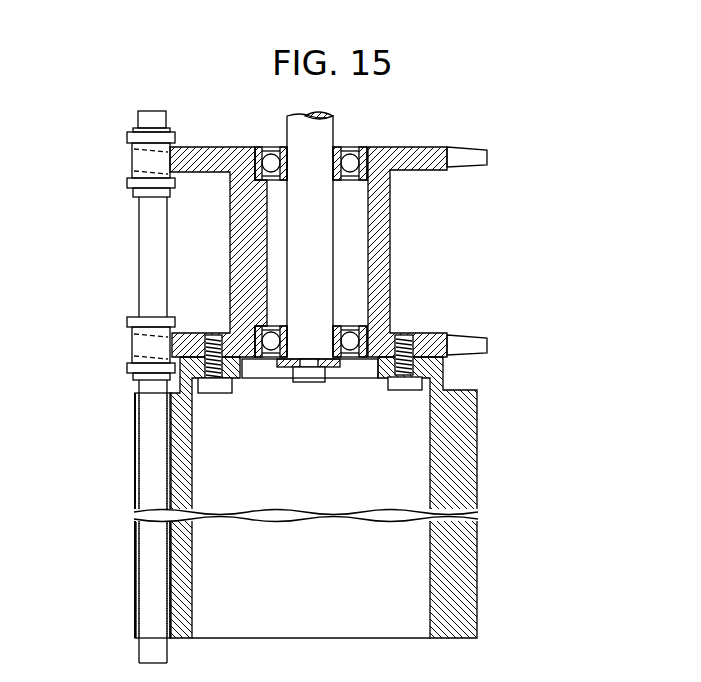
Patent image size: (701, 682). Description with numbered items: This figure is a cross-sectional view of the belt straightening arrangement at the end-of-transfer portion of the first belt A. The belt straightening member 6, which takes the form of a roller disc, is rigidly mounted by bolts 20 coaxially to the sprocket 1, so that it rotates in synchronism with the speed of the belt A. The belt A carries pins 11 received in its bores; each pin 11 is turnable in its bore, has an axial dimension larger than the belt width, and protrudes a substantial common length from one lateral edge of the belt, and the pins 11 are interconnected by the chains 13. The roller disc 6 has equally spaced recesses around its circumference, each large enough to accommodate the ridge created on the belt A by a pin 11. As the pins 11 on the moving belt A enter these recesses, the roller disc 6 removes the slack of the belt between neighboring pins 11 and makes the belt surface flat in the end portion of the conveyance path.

The sprocket 1 is at (382, 252).
The belt straightening member 6 is at (418, 453).
The pin 11 is at (145, 465).
The chain 13 is at (132, 173).
The bolt 20 is at (224, 393).
The first belt A is at (137, 570).